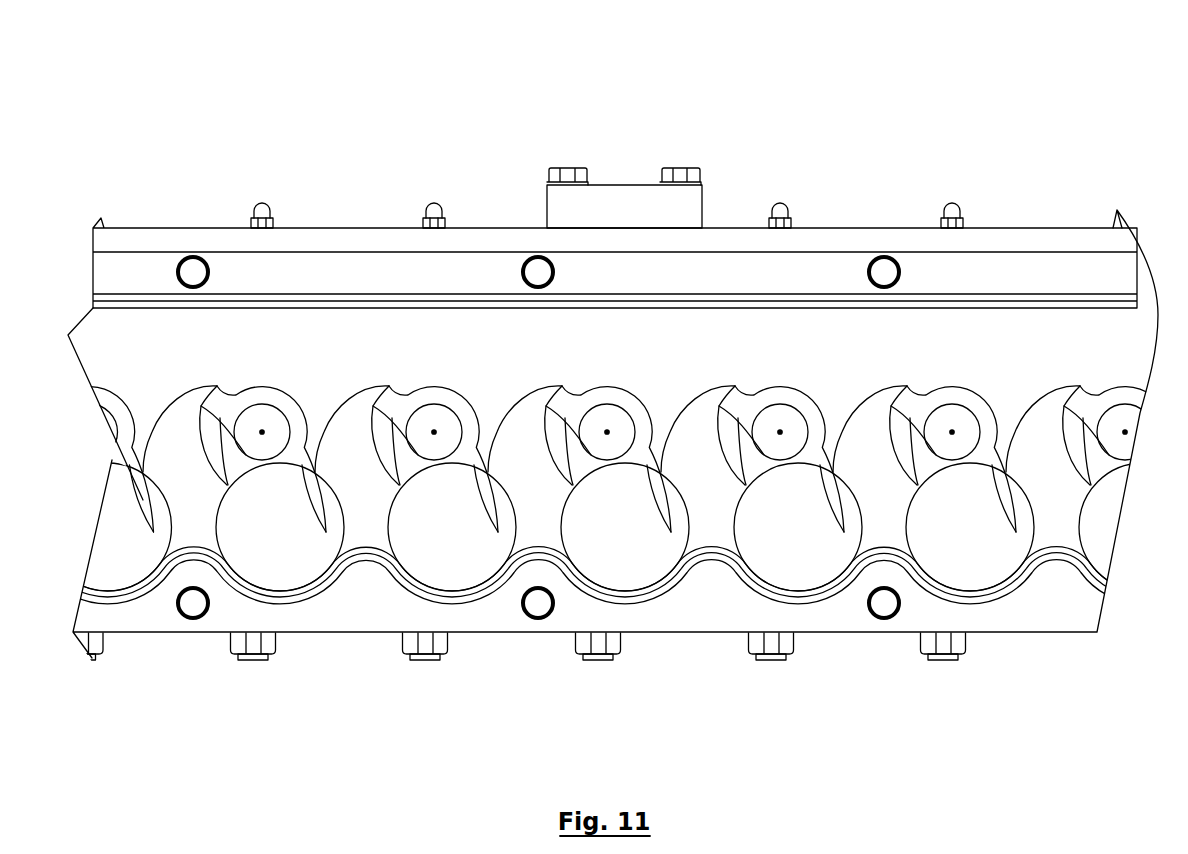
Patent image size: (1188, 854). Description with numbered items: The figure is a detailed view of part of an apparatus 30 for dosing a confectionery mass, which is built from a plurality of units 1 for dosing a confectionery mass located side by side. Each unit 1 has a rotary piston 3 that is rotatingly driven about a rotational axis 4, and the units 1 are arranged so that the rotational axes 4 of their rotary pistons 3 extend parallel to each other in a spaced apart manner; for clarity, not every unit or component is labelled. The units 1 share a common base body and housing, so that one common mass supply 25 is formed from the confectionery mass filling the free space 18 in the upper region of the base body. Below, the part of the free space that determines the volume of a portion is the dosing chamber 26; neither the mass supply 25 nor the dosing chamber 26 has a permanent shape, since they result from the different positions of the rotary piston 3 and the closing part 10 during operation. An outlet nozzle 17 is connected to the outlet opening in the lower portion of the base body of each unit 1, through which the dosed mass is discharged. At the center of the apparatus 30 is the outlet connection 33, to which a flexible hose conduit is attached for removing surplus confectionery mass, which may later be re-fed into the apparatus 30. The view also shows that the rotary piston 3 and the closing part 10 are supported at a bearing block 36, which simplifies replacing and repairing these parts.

The unit for dosing a confectionery mass 1 is at (594, 430).
The rotary piston 3 is at (244, 422).
The rotational axis 4 is at (262, 433).
The closing part 10 is at (113, 572).
The outlet nozzle 17 is at (237, 646).
The free space 18 is at (683, 353).
The mass supply 25 is at (140, 347).
The dosing chamber 26 is at (552, 438).
The apparatus for dosing a confectionery mass 30 is at (610, 106).
The outlet connection 33 is at (596, 204).
The bearing block 36 is at (117, 377).